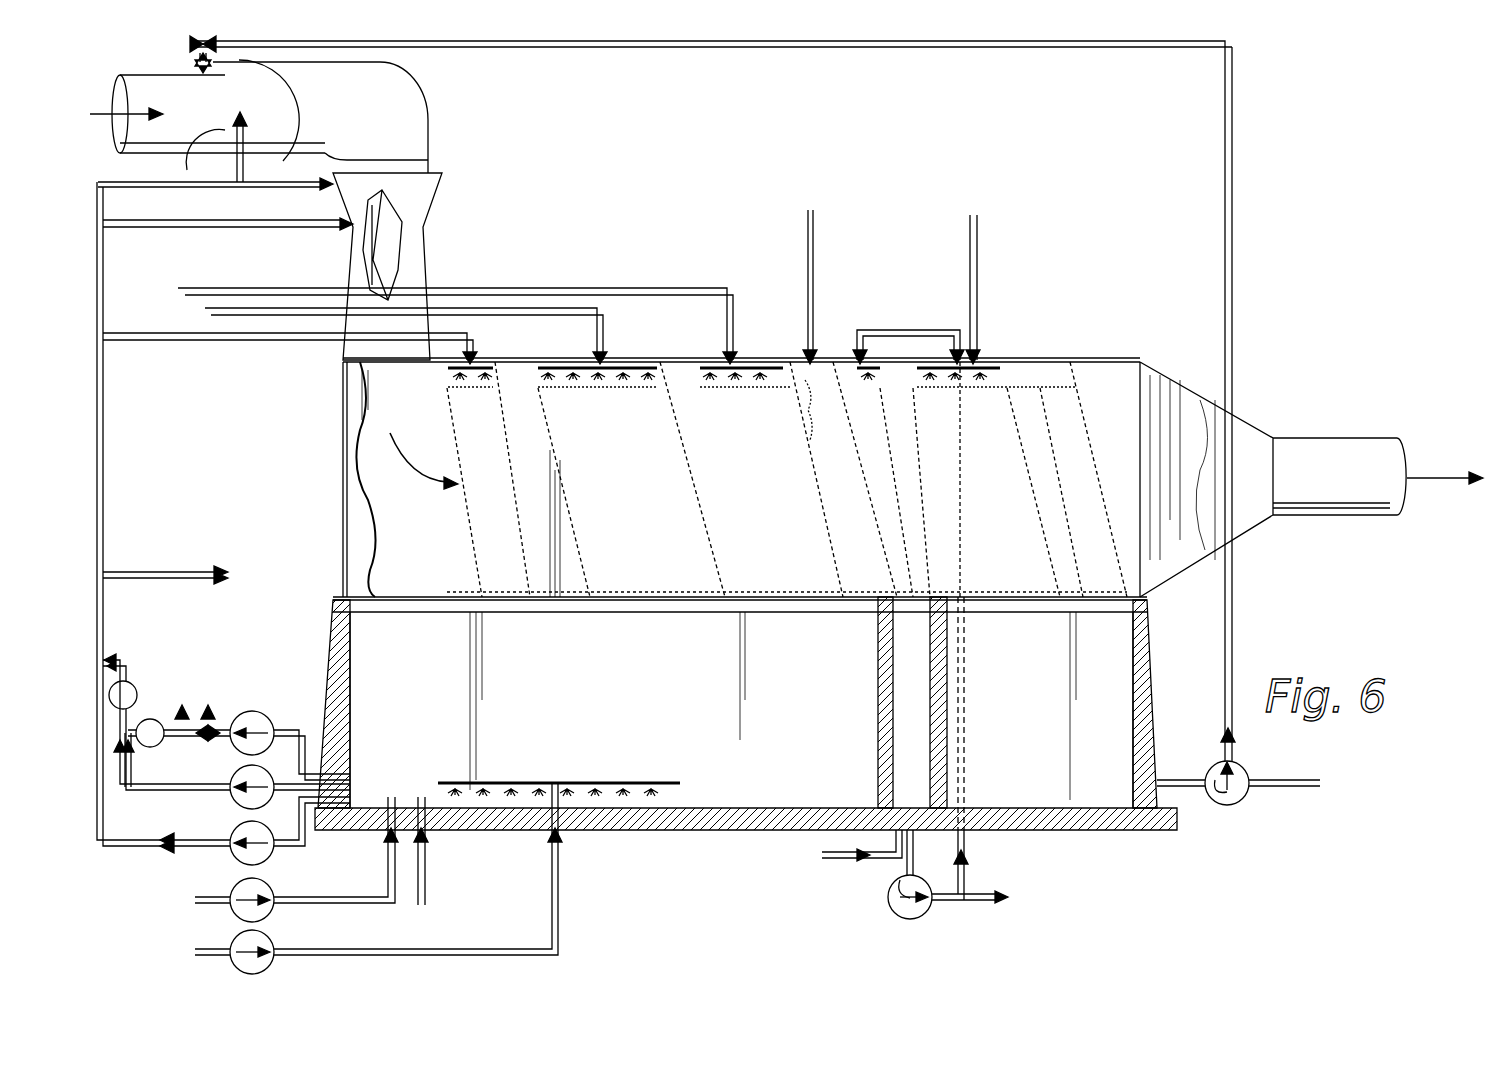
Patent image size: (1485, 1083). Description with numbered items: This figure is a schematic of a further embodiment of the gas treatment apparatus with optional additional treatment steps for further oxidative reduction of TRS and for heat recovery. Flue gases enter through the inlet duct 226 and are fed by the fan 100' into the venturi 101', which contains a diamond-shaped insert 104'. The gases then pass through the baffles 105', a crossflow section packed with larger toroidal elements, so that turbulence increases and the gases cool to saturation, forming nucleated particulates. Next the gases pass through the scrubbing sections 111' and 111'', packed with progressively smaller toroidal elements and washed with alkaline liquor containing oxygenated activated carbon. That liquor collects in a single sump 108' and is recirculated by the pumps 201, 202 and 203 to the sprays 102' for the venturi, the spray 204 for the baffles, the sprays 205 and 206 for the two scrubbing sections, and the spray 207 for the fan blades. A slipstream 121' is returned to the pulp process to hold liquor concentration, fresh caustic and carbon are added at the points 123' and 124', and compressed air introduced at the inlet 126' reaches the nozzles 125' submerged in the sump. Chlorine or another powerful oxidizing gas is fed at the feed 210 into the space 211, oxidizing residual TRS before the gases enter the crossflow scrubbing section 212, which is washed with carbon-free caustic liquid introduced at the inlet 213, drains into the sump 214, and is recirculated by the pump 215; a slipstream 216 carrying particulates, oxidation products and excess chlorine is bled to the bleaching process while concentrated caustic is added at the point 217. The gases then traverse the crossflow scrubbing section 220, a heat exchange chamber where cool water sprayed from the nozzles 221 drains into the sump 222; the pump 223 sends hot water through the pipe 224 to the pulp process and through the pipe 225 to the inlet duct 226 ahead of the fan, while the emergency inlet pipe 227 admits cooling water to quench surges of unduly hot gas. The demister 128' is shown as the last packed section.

The fan 100' is at (287, 112).
The venturi 101' is at (423, 266).
The sprays 102' is at (225, 213).
The diamond-shaped insert 104' is at (413, 245).
The baffles 105' is at (488, 479).
The sump 108' is at (746, 713).
The scrubbing section 111' is at (631, 479).
The scrubbing section 111'' is at (771, 479).
The slipstream 121' is at (165, 552).
The caustic addition point 123' is at (258, 859).
The carbon addition point 124' is at (436, 856).
The nozzles 125' is at (590, 784).
The compressed air inlet 126' is at (392, 878).
The demister 128' is at (1245, 479).
The pump 201 is at (253, 715).
The pump 202 is at (248, 770).
The pump 203 is at (245, 828).
The spray 204 is at (470, 356).
The spray 205 is at (603, 356).
The spray 206 is at (735, 356).
The spray 207 is at (205, 147).
The oxidizing gas feed 210 is at (814, 300).
The space 211 is at (858, 513).
The crossflow scrubbing section 212 is at (892, 455).
The scrubbing liquid inlet 213 is at (865, 368).
The sump 214 is at (928, 695).
The pump 215 is at (900, 912).
The slipstream 216 is at (987, 905).
The caustic addition point 217 is at (840, 865).
The crossflow scrubbing section 220 is at (1004, 455).
The nozzles 221 is at (979, 334).
The sump 222 is at (1052, 695).
The pump 223 is at (1240, 765).
The pipe 224 is at (1280, 778).
The pipe 225 is at (1233, 207).
The inlet duct 226 is at (200, 103).
The emergency inlet pipe 227 is at (185, 44).